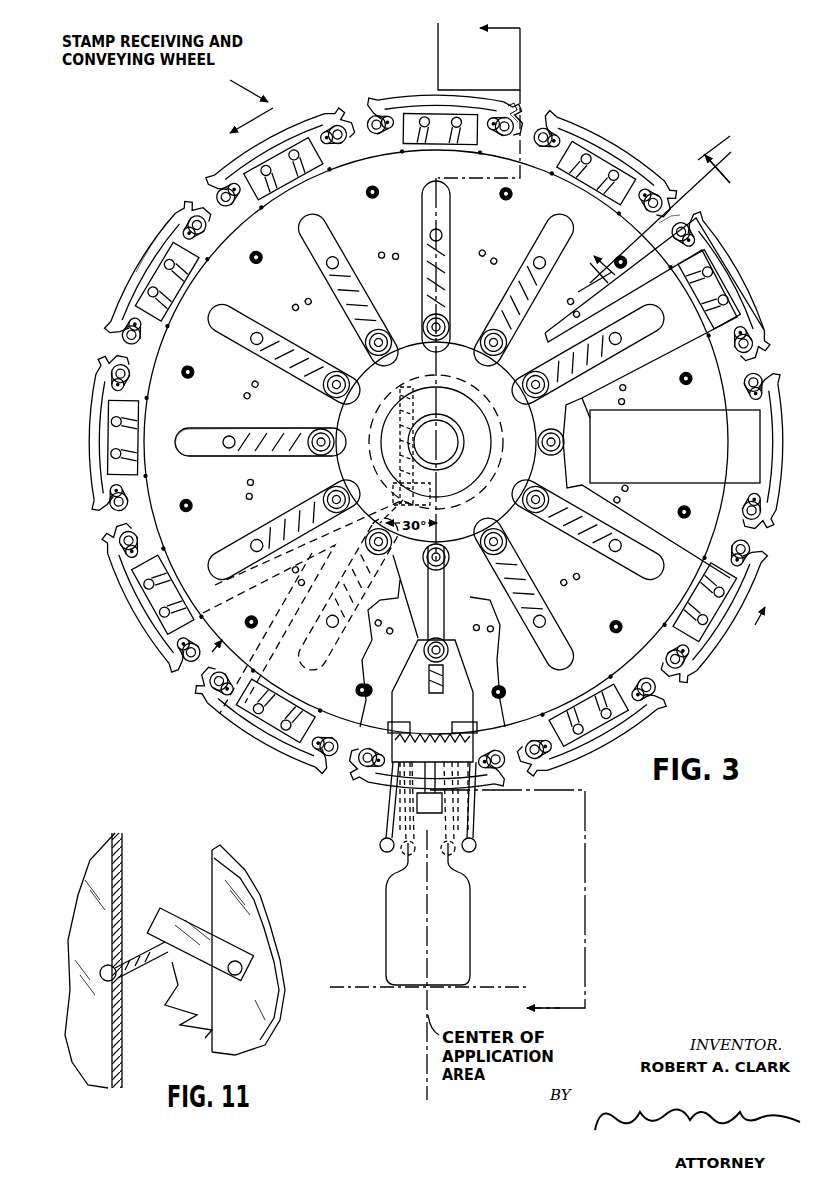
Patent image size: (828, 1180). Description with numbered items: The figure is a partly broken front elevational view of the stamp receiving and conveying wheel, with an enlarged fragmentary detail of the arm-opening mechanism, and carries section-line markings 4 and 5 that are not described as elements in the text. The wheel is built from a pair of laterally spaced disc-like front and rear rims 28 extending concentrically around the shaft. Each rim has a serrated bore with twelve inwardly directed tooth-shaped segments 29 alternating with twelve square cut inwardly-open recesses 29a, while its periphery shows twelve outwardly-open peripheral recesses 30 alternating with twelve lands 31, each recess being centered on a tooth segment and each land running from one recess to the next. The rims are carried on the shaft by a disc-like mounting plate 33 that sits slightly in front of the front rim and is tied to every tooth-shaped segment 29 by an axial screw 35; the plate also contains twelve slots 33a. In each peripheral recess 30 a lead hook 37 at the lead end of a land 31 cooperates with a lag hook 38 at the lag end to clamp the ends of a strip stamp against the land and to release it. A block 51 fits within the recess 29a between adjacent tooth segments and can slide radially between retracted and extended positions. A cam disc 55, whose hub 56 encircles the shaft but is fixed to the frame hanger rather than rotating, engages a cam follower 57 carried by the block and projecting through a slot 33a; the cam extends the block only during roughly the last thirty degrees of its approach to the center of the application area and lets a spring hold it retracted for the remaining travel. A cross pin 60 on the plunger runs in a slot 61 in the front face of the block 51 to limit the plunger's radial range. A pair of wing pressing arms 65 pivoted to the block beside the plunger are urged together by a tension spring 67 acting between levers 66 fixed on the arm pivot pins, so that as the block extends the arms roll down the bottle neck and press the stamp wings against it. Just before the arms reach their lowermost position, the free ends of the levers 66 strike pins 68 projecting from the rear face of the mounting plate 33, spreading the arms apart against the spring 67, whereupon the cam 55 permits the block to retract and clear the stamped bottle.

In FIG. 3, the section line 4- 4 is at (507, 521).
In FIG. 3, the section line 5- 5 is at (652, 213).
In FIG. 3, the rim 28 is at (722, 276).
In FIG. 3, the tooth-shaped segment 29 is at (207, 584).
In FIG. 3, the recess 29a is at (692, 477).
In FIG. 3, the peripheral recess 30 is at (781, 356).
In FIG. 3, the land 31 is at (791, 443).
In FIG. 3, the mounting plate 33 is at (552, 346).
In FIG. 11, the mounting plate 33 is at (85, 1030).
In FIG. 3, the slot 33a is at (236, 412).
In FIG. 3, the screw 35 is at (380, 190).
In FIG. 3, the lead hook 37 is at (528, 112).
In FIG. 3, the lag hook 38 is at (688, 208).
In FIG. 3, the block 51 is at (461, 692).
In FIG. 11, the block 51 is at (250, 915).
In FIG. 3, the cam disc 55 is at (398, 478).
In FIG. 3, the hub 56 is at (383, 448).
In FIG. 3, the cam follower 57 is at (373, 348).
In FIG. 3, the cross pin 60 is at (540, 618).
In FIG. 3, the slot 61 is at (262, 432).
In FIG. 3, the wing pressing arm 65 is at (420, 132).
In FIG. 3, the lever 66 is at (399, 730).
In FIG. 11, the lever 66 is at (172, 905).
In FIG. 3, the tension spring 67 is at (458, 732).
In FIG. 11, the tension spring 67 is at (198, 1010).
In FIG. 3, the pin 68 is at (257, 204).
In FIG. 11, the pin 68 is at (125, 980).